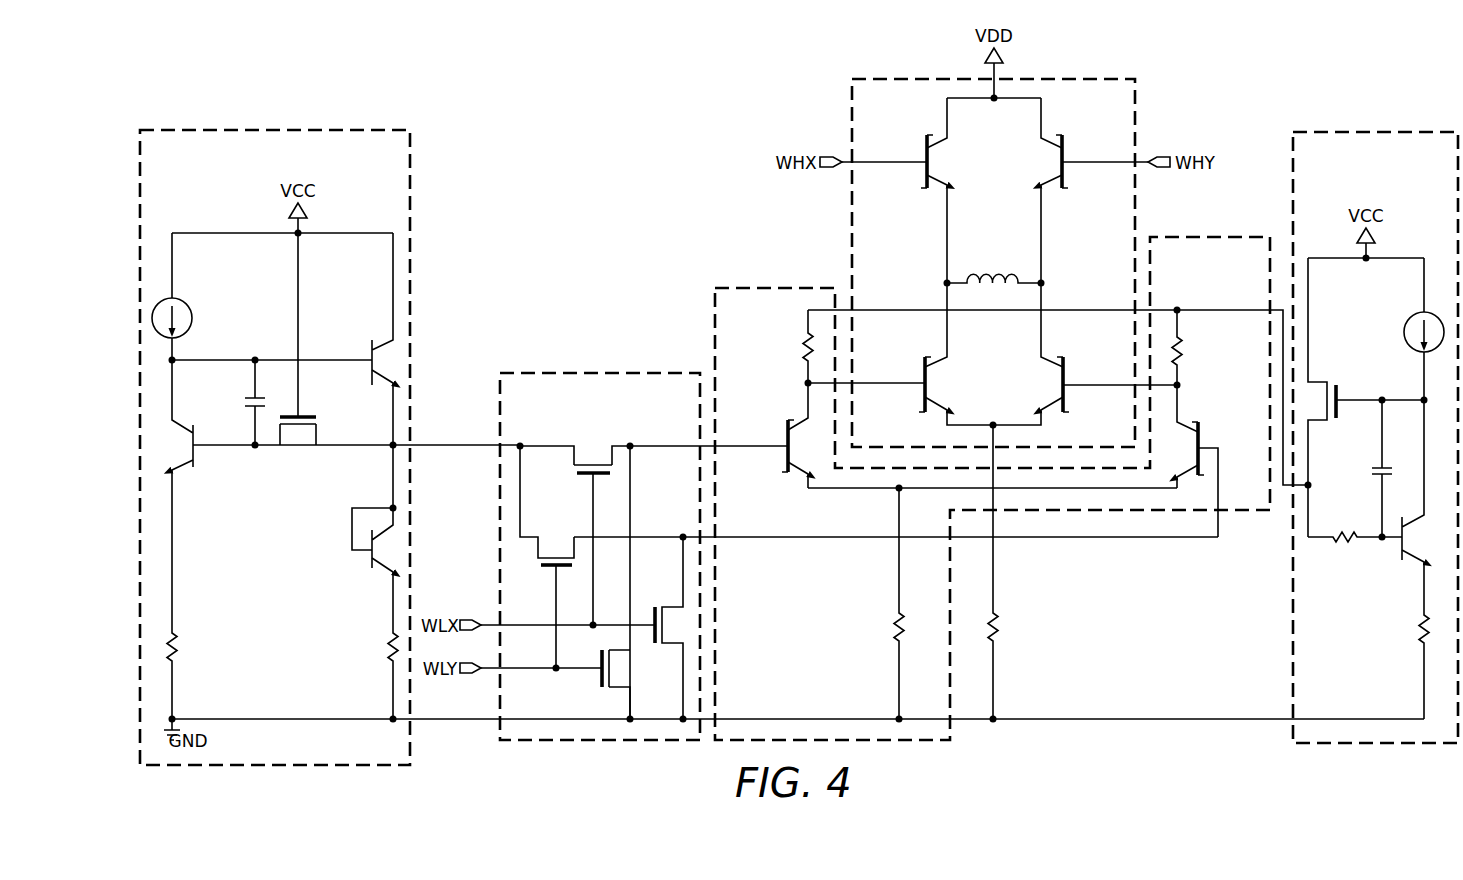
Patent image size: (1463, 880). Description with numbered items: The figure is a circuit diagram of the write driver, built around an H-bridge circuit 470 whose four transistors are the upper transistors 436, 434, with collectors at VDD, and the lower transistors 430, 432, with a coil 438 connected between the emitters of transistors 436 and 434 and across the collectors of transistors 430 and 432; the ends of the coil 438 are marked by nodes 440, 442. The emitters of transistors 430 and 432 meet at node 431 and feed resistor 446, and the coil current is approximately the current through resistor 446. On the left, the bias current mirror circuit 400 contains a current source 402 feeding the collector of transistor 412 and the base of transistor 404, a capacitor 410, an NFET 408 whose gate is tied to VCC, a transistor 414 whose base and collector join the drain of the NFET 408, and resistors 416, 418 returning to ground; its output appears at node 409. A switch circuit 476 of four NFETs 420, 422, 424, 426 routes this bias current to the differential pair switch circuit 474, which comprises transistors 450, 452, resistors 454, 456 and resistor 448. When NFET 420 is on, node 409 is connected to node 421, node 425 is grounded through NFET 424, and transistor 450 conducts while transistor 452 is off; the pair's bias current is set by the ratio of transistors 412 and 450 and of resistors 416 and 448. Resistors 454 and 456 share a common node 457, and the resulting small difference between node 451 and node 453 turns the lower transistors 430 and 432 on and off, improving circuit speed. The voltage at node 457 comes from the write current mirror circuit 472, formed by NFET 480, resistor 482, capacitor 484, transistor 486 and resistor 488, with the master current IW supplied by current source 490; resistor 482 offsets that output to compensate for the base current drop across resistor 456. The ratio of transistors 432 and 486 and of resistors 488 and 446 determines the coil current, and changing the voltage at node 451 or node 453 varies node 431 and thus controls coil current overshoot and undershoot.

The bias current mirror circuit 400 is at (273, 129).
The current source 402 is at (186, 305).
The transistor 404 is at (370, 347).
The NFET 408 is at (306, 416).
The node 409 is at (392, 450).
The capacitor 410 is at (246, 400).
The transistor 412 is at (208, 472).
The transistor 414 is at (365, 572).
The resistor 416 is at (180, 648).
The resistor 418 is at (385, 654).
The NFET 420 is at (585, 477).
The node 421 is at (631, 444).
The NFET 422 is at (549, 568).
The NFET 424 is at (675, 648).
The node 425 is at (682, 535).
The NFET 426 is at (600, 682).
The transistor 430 is at (922, 362).
The node 431 is at (994, 422).
The transistor 432 is at (1065, 362).
The transistor 434 is at (1066, 140).
The transistor 436 is at (922, 140).
The coil 438 is at (986, 275).
The coil node 440 is at (940, 283).
The coil node 442 is at (1048, 283).
The resistor 446 is at (1000, 629).
The resistor 448 is at (892, 629).
The transistor 450 is at (787, 428).
The node 451 is at (804, 384).
The transistor 452 is at (1204, 428).
The node 453 is at (1183, 385).
The resistor 454 is at (802, 348).
The resistor 456 is at (1185, 346).
The node 457 is at (1178, 306).
The H-bridge circuit 470 is at (1074, 78).
The write current mirror circuit 472 is at (1383, 130).
The differential pair switch circuit 474 is at (771, 287).
The switch circuit 476 is at (598, 372).
The NFET 480 is at (1342, 389).
The resistor 482 is at (1345, 534).
The capacitor 484 is at (1372, 469).
The transistor 486 is at (1398, 562).
The resistor 488 is at (1417, 633).
The current source 490 is at (1408, 320).